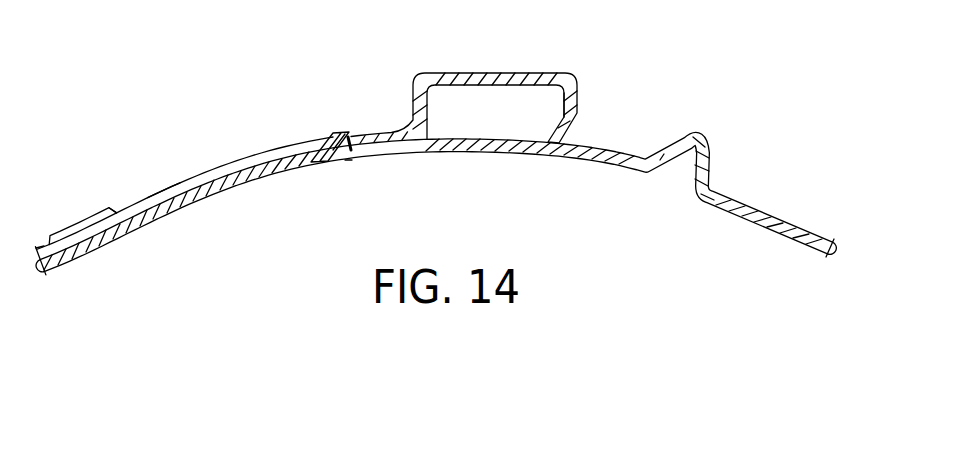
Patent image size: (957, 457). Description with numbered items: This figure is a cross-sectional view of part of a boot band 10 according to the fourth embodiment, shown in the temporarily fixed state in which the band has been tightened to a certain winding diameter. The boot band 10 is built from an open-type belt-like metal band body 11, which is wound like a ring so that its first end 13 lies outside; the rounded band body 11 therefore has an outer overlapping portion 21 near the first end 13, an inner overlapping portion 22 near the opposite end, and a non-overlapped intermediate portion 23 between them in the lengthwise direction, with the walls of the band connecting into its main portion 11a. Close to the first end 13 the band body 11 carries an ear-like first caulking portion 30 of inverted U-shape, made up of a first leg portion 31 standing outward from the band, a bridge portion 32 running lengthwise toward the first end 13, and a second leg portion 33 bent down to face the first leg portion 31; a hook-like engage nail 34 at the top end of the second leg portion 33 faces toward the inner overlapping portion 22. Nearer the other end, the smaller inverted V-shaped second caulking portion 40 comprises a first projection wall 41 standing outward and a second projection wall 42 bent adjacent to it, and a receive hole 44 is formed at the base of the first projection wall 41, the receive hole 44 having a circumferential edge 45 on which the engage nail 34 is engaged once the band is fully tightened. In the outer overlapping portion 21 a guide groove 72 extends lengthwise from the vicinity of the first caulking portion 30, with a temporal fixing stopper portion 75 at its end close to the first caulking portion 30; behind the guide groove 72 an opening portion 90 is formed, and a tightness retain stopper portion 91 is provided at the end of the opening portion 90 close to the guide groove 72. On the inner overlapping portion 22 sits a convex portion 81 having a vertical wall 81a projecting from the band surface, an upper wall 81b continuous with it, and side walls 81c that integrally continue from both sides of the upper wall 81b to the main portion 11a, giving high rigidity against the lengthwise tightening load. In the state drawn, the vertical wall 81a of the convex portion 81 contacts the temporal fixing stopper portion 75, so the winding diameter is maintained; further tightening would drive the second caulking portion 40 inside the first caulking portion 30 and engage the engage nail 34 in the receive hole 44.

The boot band 10 is at (195, 63).
The band body 11 is at (803, 229).
The main portion of the band body 11a is at (299, 160).
The first end 13 is at (572, 127).
The outer overlapping portion 21 is at (154, 194).
The inner overlapping portion 22 is at (171, 211).
The intermediate portion 23 is at (752, 216).
The first caulking portion 30 is at (500, 74).
The first leg portion 31 is at (412, 100).
The bridge portion 32 is at (468, 73).
The second leg portion 33 is at (578, 100).
The engage nail 34 is at (580, 137).
The second caulking portion 40 is at (716, 142).
The first projection wall 41 is at (709, 153).
The second projection wall 42 is at (674, 145).
The receive hole 44 is at (694, 191).
The circumferential edge 45 is at (709, 165).
The guide groove 72 is at (231, 163).
The temporal fixing stopper portion 75 is at (352, 162).
The convex portion 81 is at (336, 131).
The vertical wall 81a is at (361, 133).
The upper wall 81b is at (326, 134).
The side wall 81c is at (350, 152).
The opening portion 90 is at (80, 221).
The tightness retain stopper portion 91 is at (116, 206).